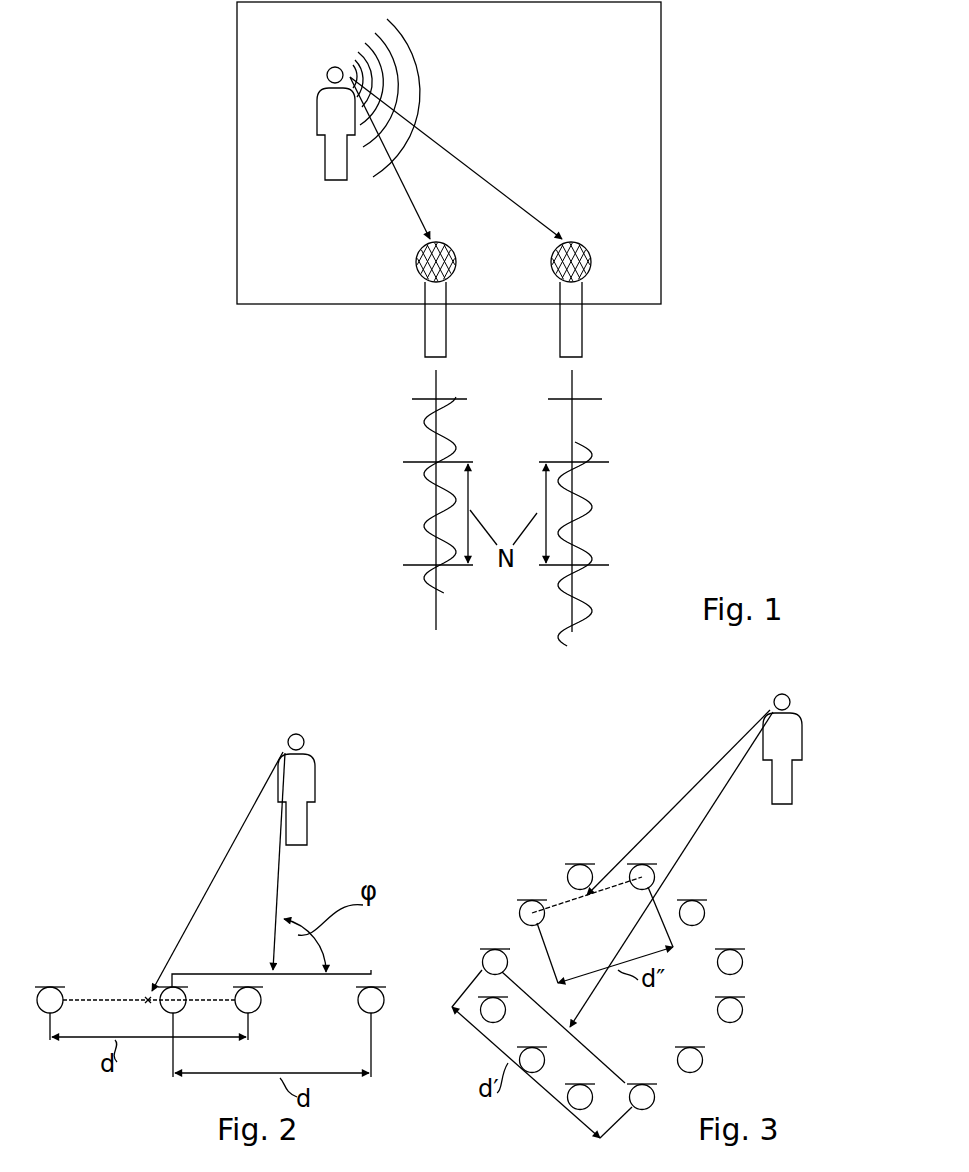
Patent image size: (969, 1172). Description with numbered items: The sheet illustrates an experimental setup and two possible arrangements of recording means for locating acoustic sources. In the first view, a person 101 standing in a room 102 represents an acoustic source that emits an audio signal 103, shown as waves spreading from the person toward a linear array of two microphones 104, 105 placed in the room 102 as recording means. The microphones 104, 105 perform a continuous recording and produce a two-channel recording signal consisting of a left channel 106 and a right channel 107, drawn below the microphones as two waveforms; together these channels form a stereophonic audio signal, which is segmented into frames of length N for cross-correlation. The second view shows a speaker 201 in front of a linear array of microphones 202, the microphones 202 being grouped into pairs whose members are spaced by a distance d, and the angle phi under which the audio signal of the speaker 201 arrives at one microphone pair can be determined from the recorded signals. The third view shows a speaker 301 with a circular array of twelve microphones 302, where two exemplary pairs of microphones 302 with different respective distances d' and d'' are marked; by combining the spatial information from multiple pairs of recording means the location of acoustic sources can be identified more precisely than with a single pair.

In FIG. 1, the person 101 is at (313, 97).
In FIG. 1, the room 102 is at (635, 38).
In FIG. 1, the audio signal 103 is at (403, 77).
In FIG. 1, the microphone 104 is at (433, 339).
In FIG. 1, the microphone 105 is at (573, 340).
In FIG. 1, the left channel 106 is at (418, 579).
In FIG. 1, the right channel 107 is at (598, 601).
In FIG. 2, the speaker 201 is at (320, 770).
In FIG. 2, the microphones 202 is at (355, 990).
In FIG. 3, the speaker 301 is at (768, 703).
In FIG. 3, the microphones 302 is at (742, 990).